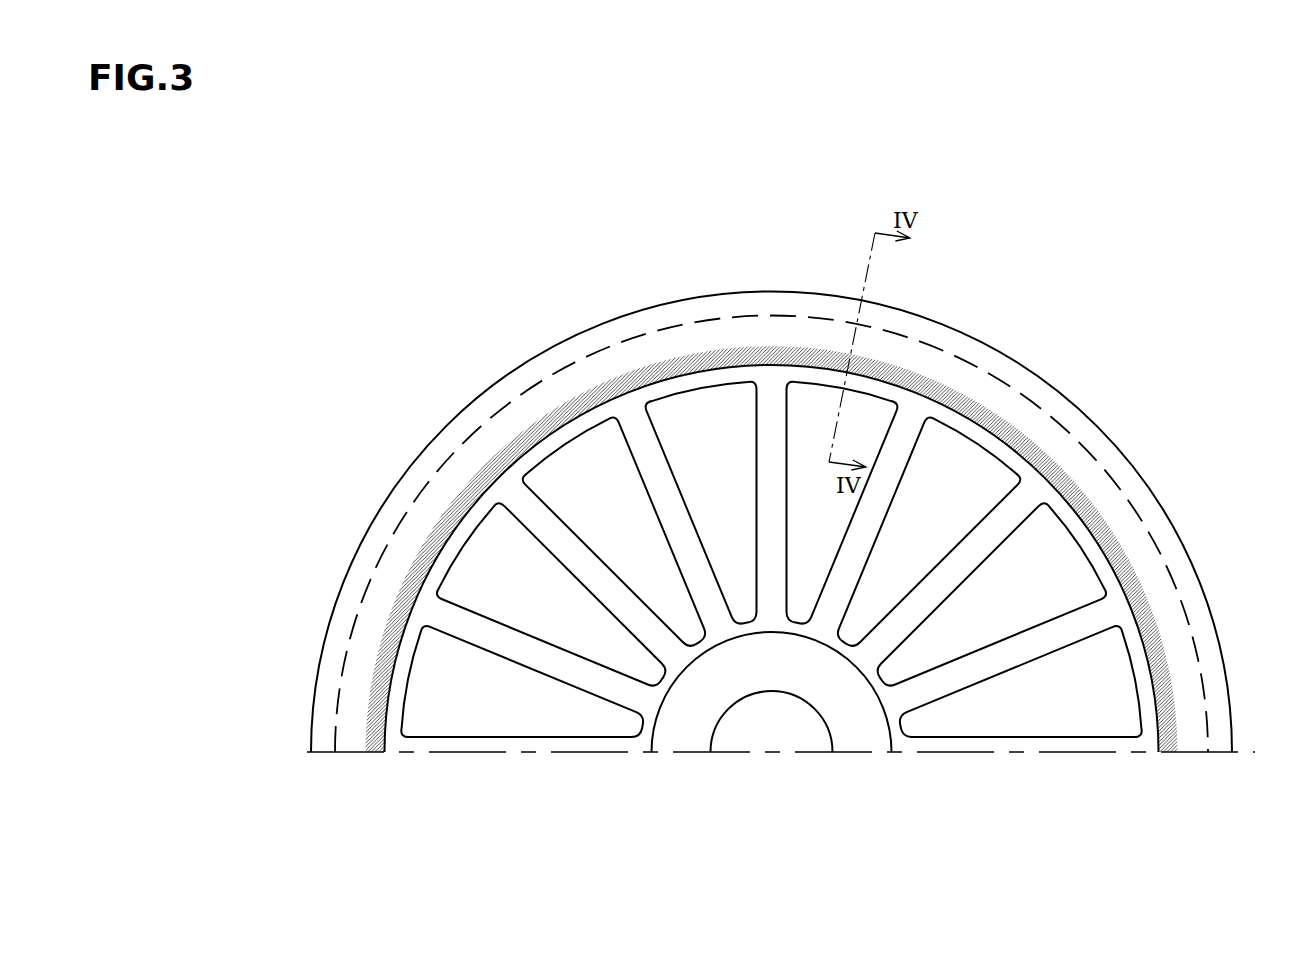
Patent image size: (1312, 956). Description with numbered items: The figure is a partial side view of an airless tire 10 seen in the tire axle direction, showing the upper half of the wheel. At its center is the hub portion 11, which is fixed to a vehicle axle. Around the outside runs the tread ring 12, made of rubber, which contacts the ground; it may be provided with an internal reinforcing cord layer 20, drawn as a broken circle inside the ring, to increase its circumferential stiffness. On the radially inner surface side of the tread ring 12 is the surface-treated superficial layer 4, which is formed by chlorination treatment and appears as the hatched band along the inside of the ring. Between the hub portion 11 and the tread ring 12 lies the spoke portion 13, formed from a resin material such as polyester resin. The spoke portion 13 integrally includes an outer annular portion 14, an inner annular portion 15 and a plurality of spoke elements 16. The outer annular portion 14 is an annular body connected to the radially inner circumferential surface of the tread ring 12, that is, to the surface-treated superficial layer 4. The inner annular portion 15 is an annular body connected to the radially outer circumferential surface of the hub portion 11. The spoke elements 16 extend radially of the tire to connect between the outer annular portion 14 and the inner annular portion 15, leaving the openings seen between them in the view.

The airless tire 10 is at (1063, 302).
The hub portion 11 is at (690, 735).
The tread ring 12 is at (388, 485).
The spoke portion 13 is at (548, 830).
The outer annular portion 14 is at (395, 683).
The inner annular portion 15 is at (645, 728).
The spoke elements 16 is at (510, 645).
The internal reinforcing cord layer 20 is at (553, 373).
The surface-treated superficial layer 4 is at (666, 384).